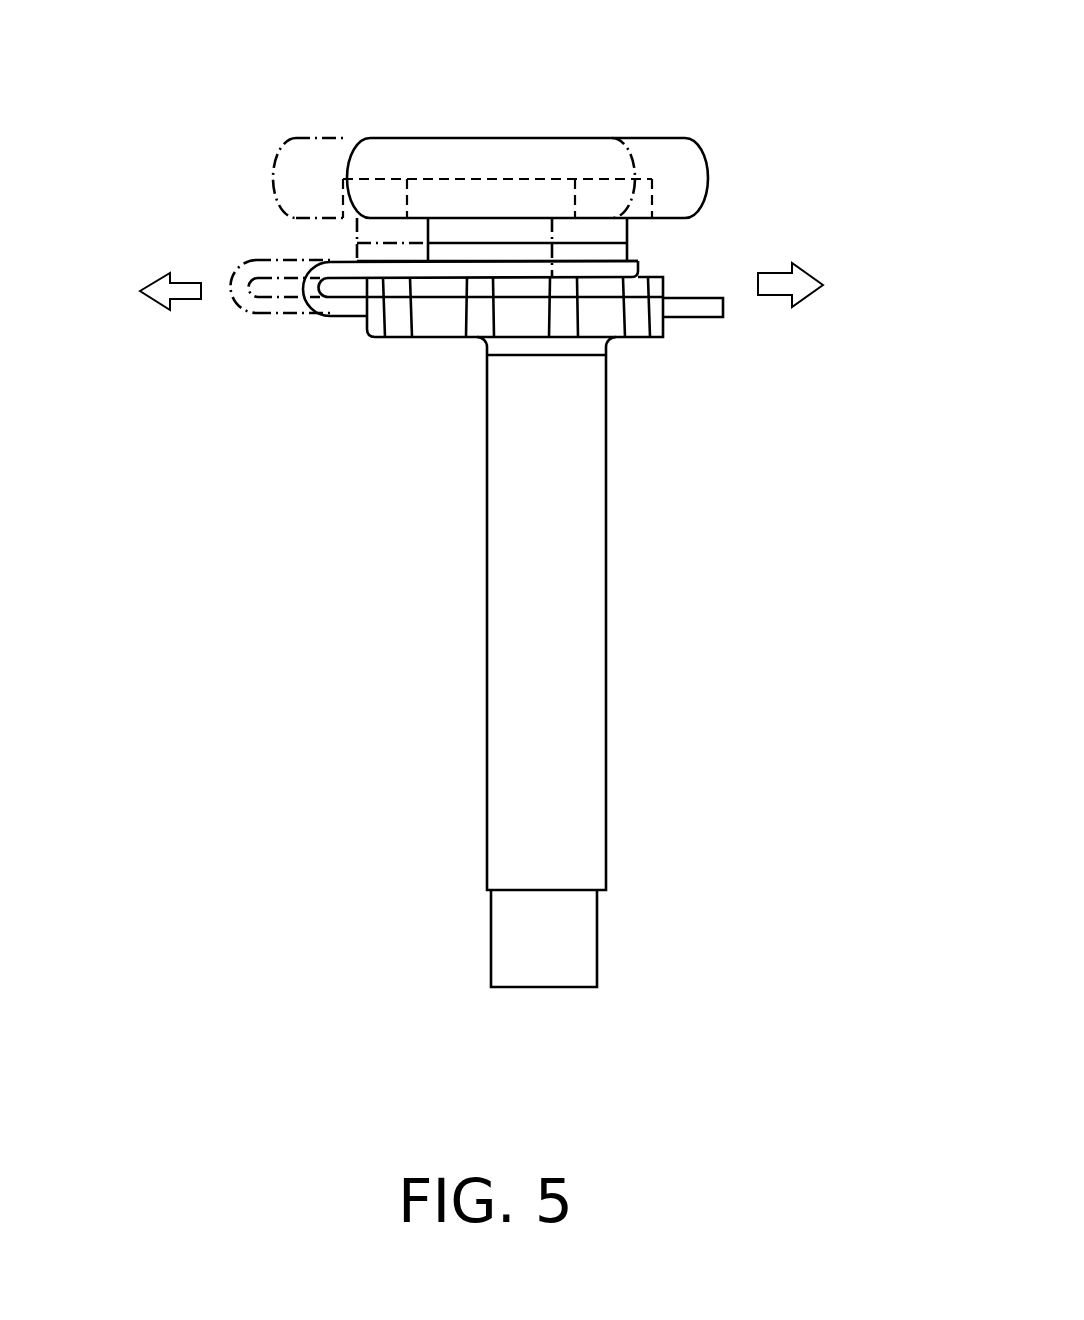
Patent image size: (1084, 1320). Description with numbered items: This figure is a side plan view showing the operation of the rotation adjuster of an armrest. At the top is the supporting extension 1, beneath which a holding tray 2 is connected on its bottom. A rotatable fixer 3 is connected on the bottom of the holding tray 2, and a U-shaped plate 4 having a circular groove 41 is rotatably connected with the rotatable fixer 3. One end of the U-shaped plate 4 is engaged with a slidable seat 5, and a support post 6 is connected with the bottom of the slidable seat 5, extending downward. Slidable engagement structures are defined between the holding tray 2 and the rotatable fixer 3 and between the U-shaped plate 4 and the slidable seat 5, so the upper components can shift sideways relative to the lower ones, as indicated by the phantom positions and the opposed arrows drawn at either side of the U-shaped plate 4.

The supporting extension 1 is at (524, 137).
The holding tray 2 is at (455, 178).
The rotatable fixer 3 is at (612, 229).
The U-shaped plate 4 is at (330, 312).
The circular groove 41 is at (627, 253).
The slidable seat 5 is at (442, 323).
The support post 6 is at (565, 651).